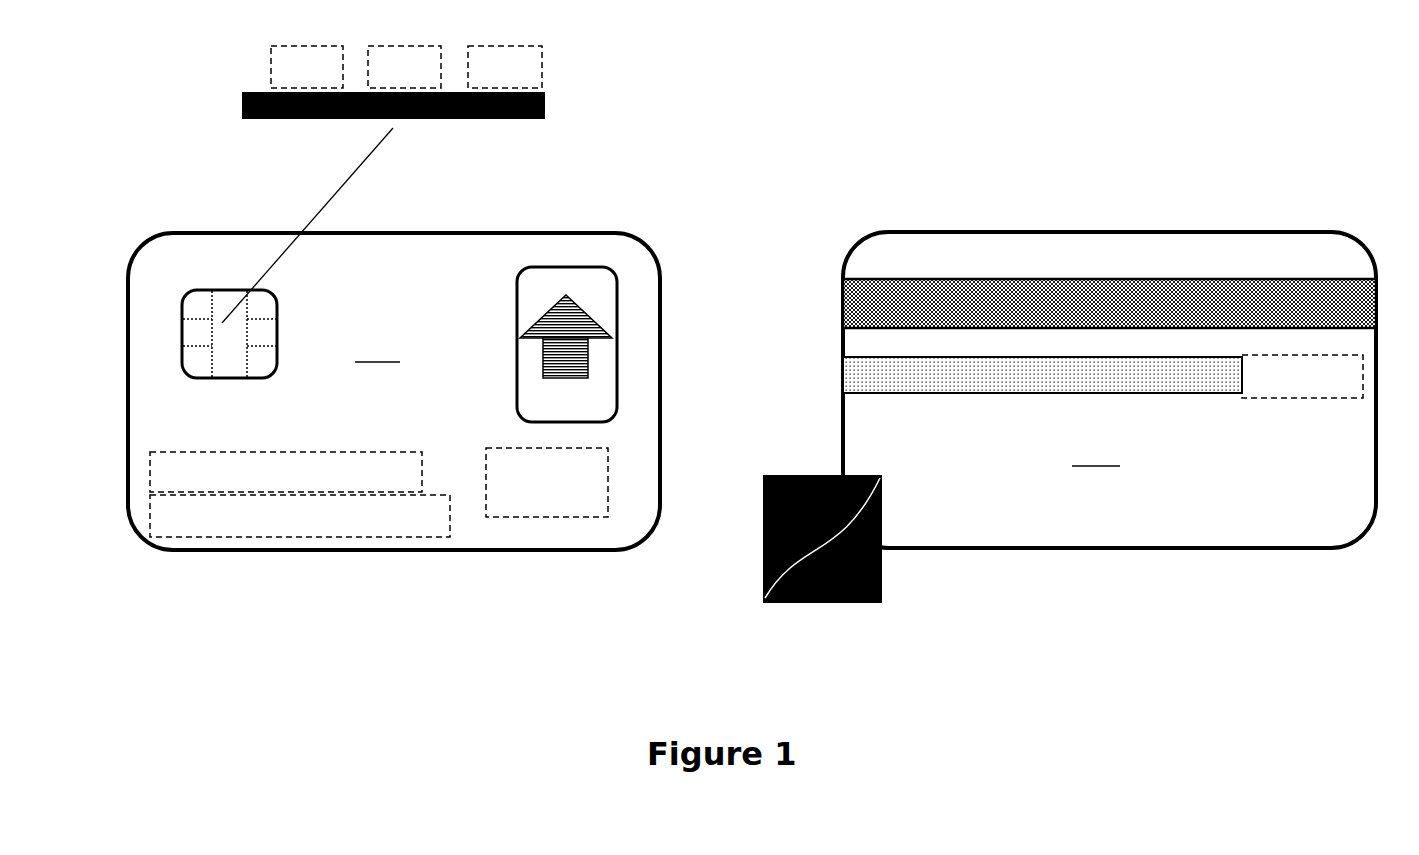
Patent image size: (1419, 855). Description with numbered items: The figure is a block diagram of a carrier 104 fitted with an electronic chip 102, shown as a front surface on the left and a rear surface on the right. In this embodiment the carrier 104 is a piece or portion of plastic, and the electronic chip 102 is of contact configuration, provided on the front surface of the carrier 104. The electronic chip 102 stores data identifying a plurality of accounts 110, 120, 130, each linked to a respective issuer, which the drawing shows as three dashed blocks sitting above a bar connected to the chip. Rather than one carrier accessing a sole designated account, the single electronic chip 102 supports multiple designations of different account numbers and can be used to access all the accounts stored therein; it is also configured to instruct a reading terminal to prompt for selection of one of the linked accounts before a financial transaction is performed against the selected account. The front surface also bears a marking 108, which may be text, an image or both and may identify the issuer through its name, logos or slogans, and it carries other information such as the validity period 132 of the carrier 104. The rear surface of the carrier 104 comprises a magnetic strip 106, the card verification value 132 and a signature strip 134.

The electronic chip 102 is at (182, 290).
The carrier 104 is at (638, 493).
The magnetic strip 106 is at (883, 306).
The marking 108 is at (592, 390).
The account 110 is at (210, 592).
The account 120 is at (480, 548).
The account 130 is at (505, 67).
The validity period and card verification value 132 is at (582, 513).
The signature strip 134 is at (903, 380).